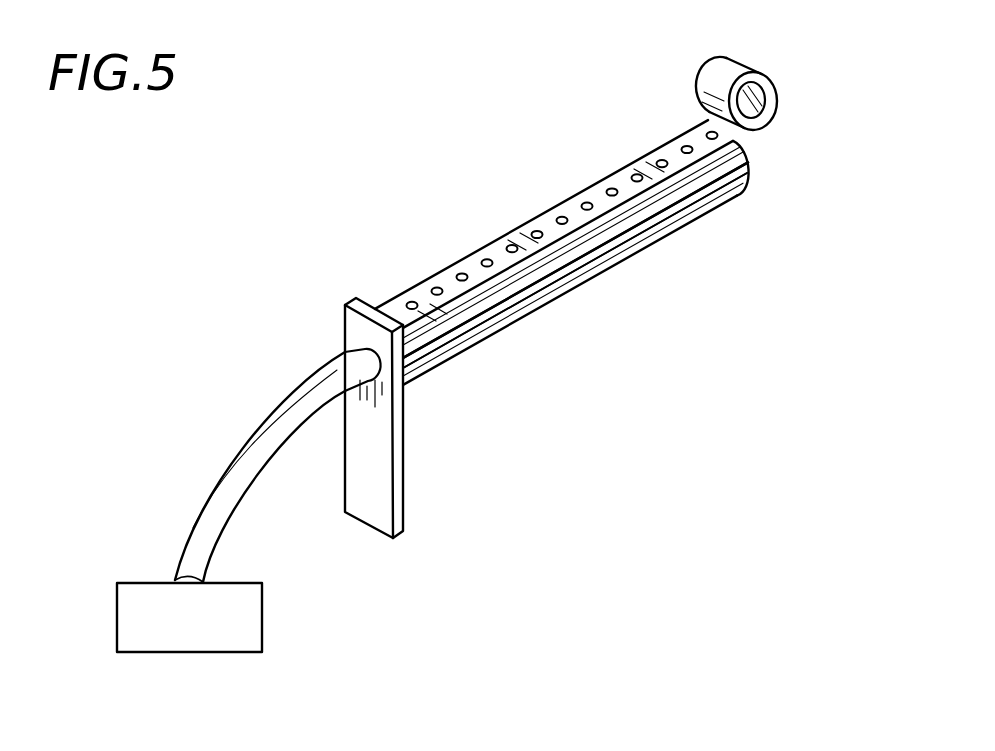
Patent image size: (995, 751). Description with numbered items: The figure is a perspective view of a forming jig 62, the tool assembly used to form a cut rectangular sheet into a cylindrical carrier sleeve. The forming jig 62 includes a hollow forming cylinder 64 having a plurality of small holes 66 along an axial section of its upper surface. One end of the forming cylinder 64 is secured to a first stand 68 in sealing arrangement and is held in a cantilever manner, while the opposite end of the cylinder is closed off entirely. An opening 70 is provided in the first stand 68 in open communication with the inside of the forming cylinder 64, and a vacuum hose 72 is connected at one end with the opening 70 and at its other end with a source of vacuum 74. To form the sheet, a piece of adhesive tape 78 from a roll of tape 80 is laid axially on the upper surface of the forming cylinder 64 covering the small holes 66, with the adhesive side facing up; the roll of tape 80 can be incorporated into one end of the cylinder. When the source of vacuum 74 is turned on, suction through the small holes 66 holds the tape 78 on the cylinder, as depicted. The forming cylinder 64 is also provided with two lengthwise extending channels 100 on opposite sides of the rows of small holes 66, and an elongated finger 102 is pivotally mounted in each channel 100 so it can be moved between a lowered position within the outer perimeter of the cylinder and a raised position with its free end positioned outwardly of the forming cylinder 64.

The forming jig 62 is at (368, 172).
The hollow forming cylinder 64 is at (445, 340).
The small holes 66 is at (486, 259).
The first stand 68 is at (381, 513).
The opening 70 is at (358, 350).
The vacuum hose 72 is at (215, 498).
The source of vacuum 74 is at (195, 655).
The adhesive tape 78 is at (628, 176).
The roll of tape 80 is at (721, 82).
The lengthwise extending channels 100 is at (600, 250).
The elongated finger 102 is at (516, 283).